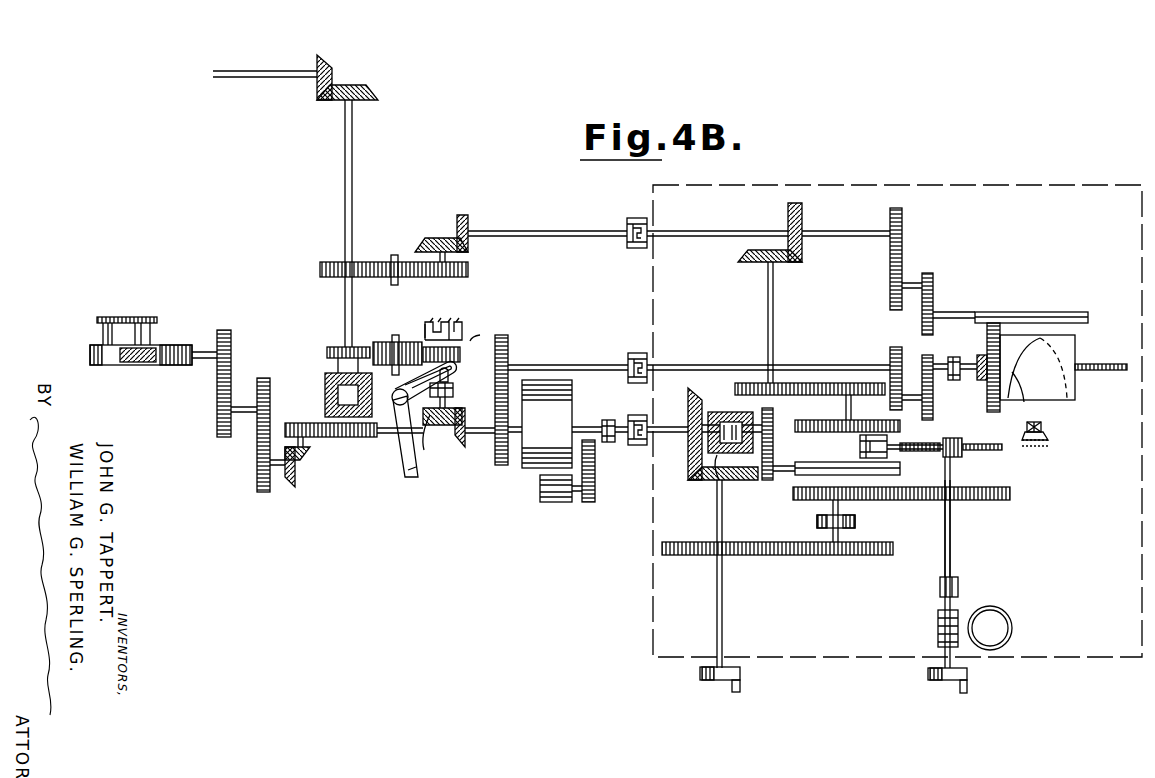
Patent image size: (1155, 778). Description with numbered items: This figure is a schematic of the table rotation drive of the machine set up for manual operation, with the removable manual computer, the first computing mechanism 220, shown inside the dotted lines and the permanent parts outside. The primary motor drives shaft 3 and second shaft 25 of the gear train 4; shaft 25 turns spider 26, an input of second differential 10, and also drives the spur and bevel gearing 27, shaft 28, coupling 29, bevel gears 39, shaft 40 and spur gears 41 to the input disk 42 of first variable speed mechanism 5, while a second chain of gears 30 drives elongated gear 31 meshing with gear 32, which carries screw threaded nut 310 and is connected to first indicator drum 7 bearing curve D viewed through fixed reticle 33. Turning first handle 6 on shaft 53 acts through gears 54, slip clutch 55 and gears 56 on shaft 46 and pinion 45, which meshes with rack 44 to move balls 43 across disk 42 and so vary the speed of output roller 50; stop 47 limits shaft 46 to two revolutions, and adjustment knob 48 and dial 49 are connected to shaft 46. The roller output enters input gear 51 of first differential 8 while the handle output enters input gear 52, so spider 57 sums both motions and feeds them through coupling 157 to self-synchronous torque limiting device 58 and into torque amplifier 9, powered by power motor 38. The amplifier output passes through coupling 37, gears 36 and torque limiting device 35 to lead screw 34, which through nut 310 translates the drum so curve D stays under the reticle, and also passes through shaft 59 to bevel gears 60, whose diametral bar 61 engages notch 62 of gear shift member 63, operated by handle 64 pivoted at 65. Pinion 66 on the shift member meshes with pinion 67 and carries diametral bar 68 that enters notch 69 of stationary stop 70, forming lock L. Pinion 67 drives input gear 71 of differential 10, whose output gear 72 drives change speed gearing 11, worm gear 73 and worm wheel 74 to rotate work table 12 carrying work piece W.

The shaft 3 is at (240, 74).
The second shaft 25 is at (345, 176).
The gear train 4 is at (317, 236).
The chain of spur and bevel gears 27 is at (508, 266).
The shaft 28 is at (562, 234).
The coupling 29 is at (634, 254).
The bevel gears 39 is at (792, 206).
The shaft 40 is at (768, 306).
The second chain of gears 30 is at (906, 334).
The screw threaded nut 310 is at (984, 355).
The elongated gear 31 is at (1048, 312).
The gear 32 is at (991, 323).
The first indicator drum 7 is at (1050, 392).
The curve D is at (1035, 380).
The lead screw 34 is at (1089, 366).
The set of gears 36 is at (964, 406).
The self-synchronous torque limiting device 35 is at (946, 358).
The coupling 37 is at (632, 353).
The fixed reticle 33 is at (1080, 447).
The spur gears 41 is at (850, 383).
The input disk 42 is at (852, 420).
The balls 43 is at (842, 452).
The pinion 45 is at (939, 438).
The rack 44 is at (977, 445).
The first variable speed mechanism 5 is at (987, 480).
The shaft 46 is at (950, 526).
The stop 47 is at (940, 586).
The dial 49 is at (1002, 622).
The adjustment knob 48 is at (928, 674).
The shaft 53 is at (717, 598).
The first handle 6 is at (700, 678).
The gears 54 is at (798, 576).
The slip clutch 55 is at (817, 522).
The gears 56 is at (908, 518).
The output roller 50 is at (895, 468).
The first differential 8 is at (796, 452).
The input gear 52 is at (716, 412).
The input gear 51 is at (750, 414).
The spider 57 is at (721, 465).
The torque amplifier 9 is at (560, 406).
The self-synchronous torque limiting device 58 is at (610, 442).
The coupling 157 is at (637, 415).
The power motor 38 is at (557, 490).
The shaft 59 is at (485, 442).
The diametral bar 61 is at (464, 420).
The bevel gears 60 is at (464, 424).
The notch 62 is at (453, 392).
The gear shift member 63 is at (452, 379).
The handle 64 is at (414, 478).
The pivot 65 is at (392, 434).
The pinion 66 is at (458, 354).
The pinion 67 is at (392, 342).
The diametral bar 68 is at (487, 328).
The notch 69 is at (423, 320).
The stationary stop 70 is at (425, 324).
The lock L is at (490, 309).
The input gear 71 is at (327, 376).
The gear 72 is at (326, 416).
The spider 26 is at (380, 458).
The second differential 10 is at (360, 482).
The change speed gearing 11 is at (233, 464).
The worm wheel 74 is at (94, 356).
The work table 12 is at (106, 332).
The worm gear 73 is at (154, 348).
The work piece W is at (140, 306).
The first computing mechanism 220 is at (1012, 185).